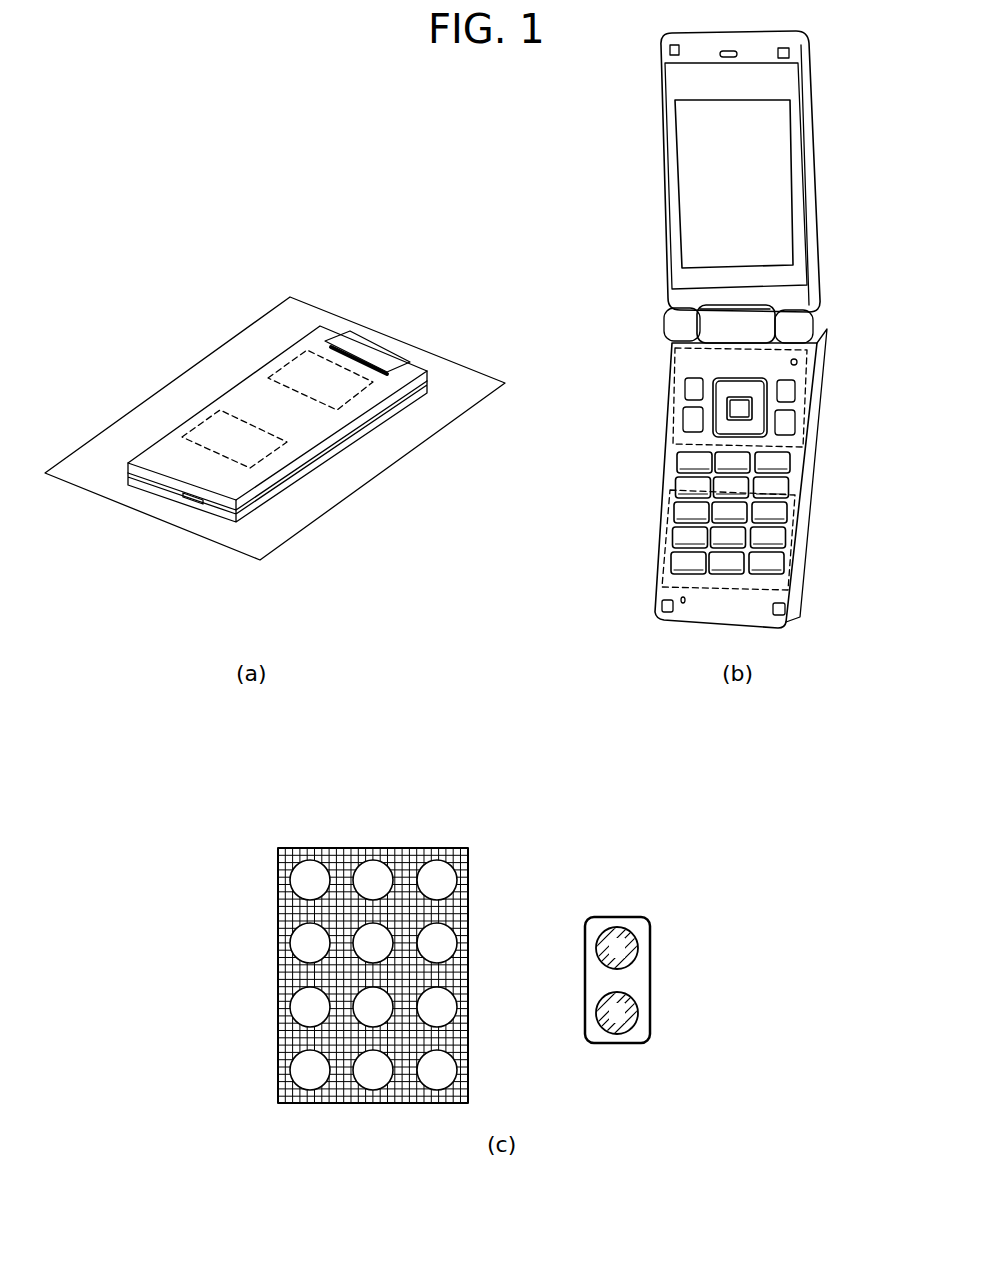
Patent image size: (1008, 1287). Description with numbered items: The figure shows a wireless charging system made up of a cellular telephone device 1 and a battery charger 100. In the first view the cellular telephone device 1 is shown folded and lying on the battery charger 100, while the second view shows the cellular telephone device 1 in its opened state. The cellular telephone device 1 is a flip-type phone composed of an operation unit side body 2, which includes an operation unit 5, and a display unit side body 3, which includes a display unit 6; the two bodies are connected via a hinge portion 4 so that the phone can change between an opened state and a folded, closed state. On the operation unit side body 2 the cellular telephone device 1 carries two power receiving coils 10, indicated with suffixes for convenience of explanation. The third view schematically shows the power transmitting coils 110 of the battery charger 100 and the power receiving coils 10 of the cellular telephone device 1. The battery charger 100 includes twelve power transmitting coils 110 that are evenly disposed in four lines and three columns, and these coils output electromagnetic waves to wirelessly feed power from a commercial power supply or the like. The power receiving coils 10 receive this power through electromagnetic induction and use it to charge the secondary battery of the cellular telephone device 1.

The cellular telephone device 1 is at (314, 289).
The operation unit side body 2 is at (308, 468).
The display unit side body 3 is at (237, 387).
The hinge portion 4 is at (360, 347).
The operation unit 5 is at (777, 468).
The display unit 6 is at (690, 187).
The power receiving coils 10 is at (388, 417).
The battery charger 100 is at (137, 430).
The power transmitting coils 110 is at (308, 862).